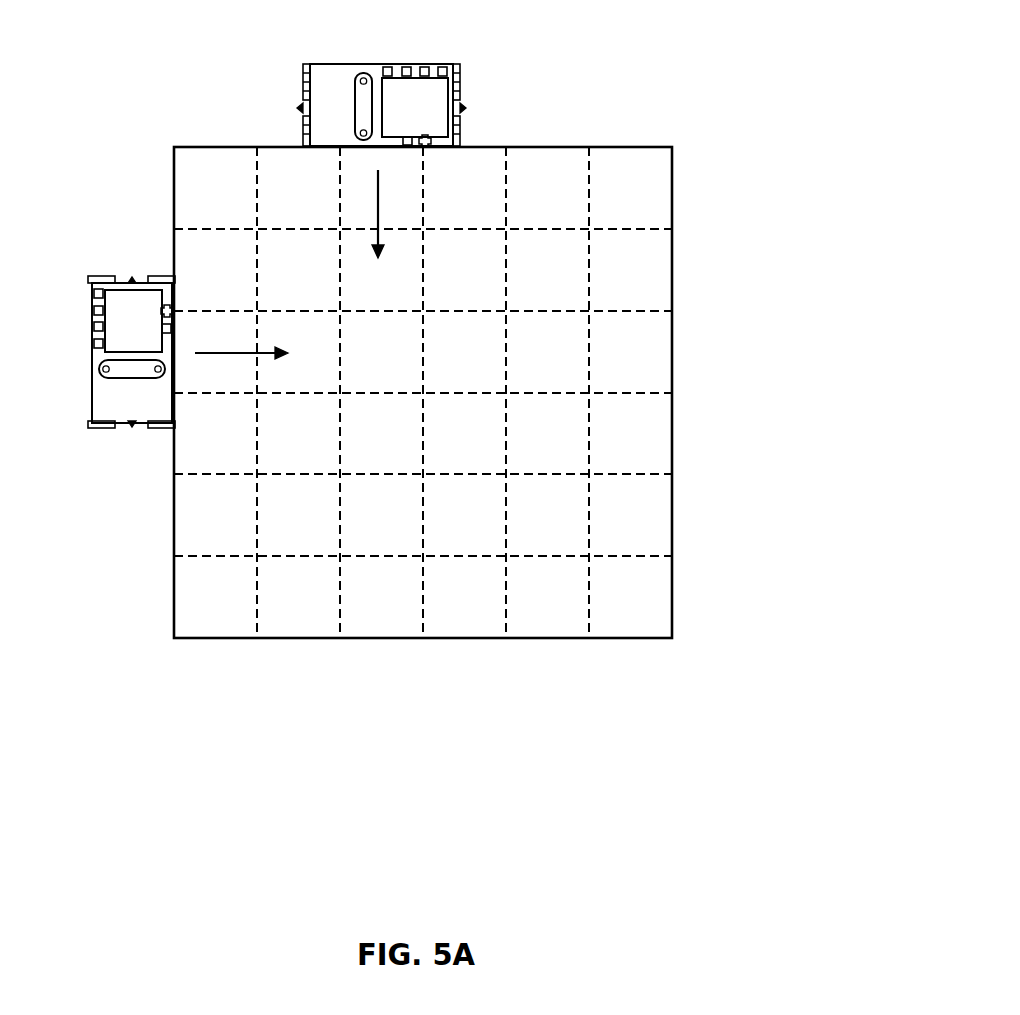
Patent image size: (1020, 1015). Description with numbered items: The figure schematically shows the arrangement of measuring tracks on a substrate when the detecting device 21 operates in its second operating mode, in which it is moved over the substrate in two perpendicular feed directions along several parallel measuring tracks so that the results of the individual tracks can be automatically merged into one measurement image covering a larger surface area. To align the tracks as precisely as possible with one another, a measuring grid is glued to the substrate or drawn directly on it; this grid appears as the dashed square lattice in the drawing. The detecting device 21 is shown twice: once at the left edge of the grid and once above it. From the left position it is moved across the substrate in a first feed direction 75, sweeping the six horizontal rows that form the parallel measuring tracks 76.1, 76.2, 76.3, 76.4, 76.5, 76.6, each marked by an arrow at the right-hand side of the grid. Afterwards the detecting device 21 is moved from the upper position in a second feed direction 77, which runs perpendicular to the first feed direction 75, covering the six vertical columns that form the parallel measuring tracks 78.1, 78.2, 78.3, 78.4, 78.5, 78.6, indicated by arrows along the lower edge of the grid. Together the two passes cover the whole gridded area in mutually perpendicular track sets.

The detecting device 21 is at (409, 102).
The first feed direction 75 is at (232, 354).
The second feed direction 77 is at (380, 209).
The measuring track 76.1 is at (663, 192).
The measuring track 76.2 is at (663, 272).
The measuring track 76.3 is at (663, 352).
The measuring track 76.4 is at (663, 433).
The measuring track 76.5 is at (663, 515).
The measuring track 76.6 is at (663, 596).
The measuring track 78.1 is at (216, 626).
The measuring track 78.2 is at (299, 626).
The measuring track 78.3 is at (382, 626).
The measuring track 78.4 is at (466, 626).
The measuring track 78.5 is at (549, 626).
The measuring track 78.6 is at (632, 626).